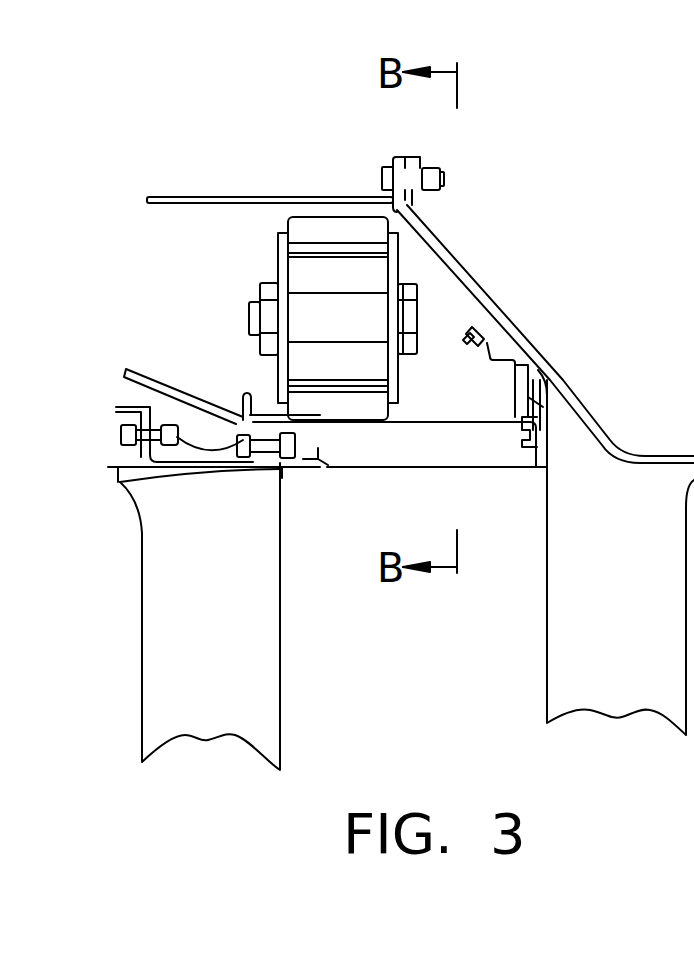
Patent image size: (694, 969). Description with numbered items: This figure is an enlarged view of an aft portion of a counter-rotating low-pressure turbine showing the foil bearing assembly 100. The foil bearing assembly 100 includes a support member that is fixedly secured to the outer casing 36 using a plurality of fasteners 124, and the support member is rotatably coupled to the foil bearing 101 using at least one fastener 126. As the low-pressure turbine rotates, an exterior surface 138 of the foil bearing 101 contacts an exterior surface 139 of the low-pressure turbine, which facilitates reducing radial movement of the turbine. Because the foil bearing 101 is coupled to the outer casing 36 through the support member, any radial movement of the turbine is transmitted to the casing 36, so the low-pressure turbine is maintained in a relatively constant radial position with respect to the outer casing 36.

The outer casing 36 is at (242, 198).
The foil bearing assembly 100 is at (205, 252).
The foil bearing 101 is at (346, 217).
The fasteners 124 is at (382, 167).
The fastener 126 is at (268, 340).
The exterior surface of foil bearing 138 is at (358, 423).
The exterior surface of low-pressure turbine 139 is at (417, 422).